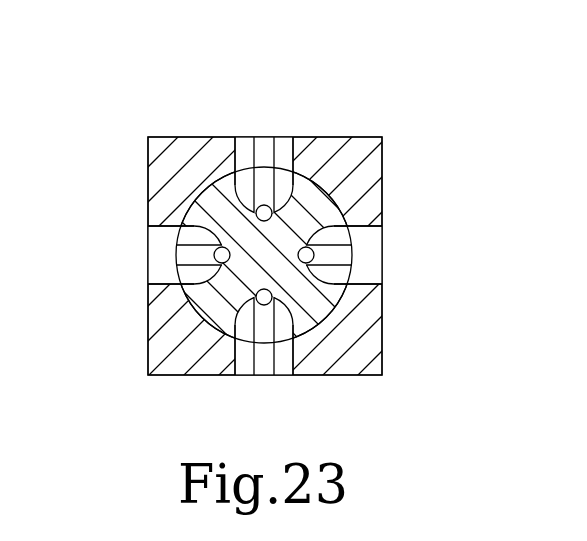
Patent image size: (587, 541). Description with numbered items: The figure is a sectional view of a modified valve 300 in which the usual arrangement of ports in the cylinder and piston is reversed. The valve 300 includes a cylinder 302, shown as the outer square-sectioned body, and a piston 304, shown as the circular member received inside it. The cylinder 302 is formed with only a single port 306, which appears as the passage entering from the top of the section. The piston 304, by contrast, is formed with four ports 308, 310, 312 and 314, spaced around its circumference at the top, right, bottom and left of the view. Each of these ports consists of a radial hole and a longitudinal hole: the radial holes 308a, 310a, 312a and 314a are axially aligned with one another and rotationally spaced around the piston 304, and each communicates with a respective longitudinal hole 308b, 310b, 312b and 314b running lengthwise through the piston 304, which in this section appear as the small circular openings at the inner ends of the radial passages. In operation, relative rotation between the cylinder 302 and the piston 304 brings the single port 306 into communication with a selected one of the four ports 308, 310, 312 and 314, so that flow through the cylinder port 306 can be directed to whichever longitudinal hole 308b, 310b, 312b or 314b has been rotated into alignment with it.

The valve 300 is at (293, 270).
The cylinder 302 is at (382, 174).
The piston 304 is at (203, 193).
The port 306 is at (263, 140).
The port 308 is at (268, 133).
The radial hole 308a is at (283, 124).
The longitudinal hole 308b is at (236, 138).
The port 310 is at (404, 263).
The radial hole 310a is at (382, 227).
The longitudinal hole 310b is at (395, 295).
The port 312 is at (255, 370).
The radial hole 312a is at (323, 367).
The longitudinal hole 312b is at (236, 377).
The port 314 is at (120, 261).
The radial hole 314a is at (145, 262).
The longitudinal hole 314b is at (148, 227).